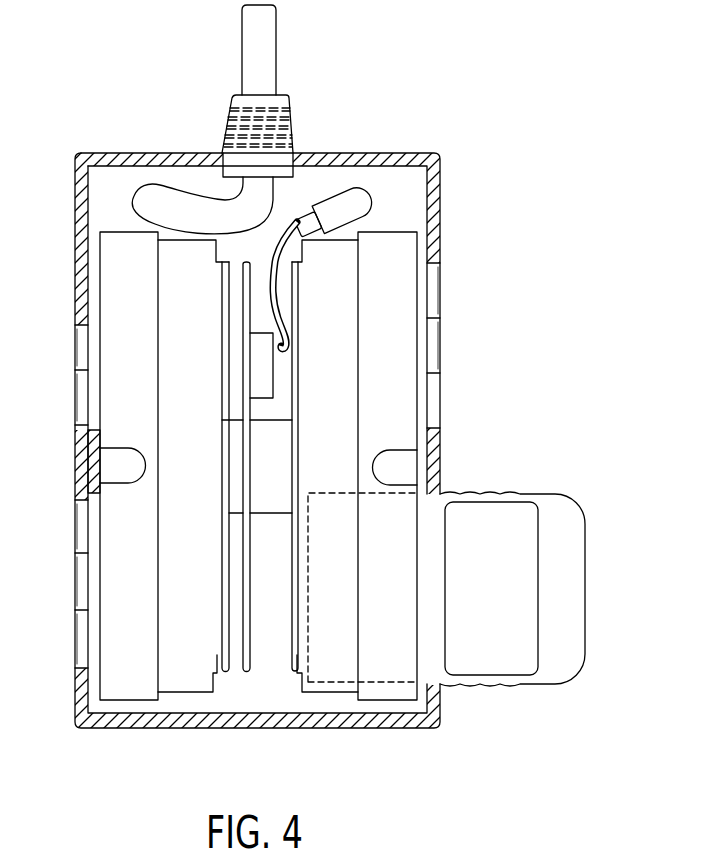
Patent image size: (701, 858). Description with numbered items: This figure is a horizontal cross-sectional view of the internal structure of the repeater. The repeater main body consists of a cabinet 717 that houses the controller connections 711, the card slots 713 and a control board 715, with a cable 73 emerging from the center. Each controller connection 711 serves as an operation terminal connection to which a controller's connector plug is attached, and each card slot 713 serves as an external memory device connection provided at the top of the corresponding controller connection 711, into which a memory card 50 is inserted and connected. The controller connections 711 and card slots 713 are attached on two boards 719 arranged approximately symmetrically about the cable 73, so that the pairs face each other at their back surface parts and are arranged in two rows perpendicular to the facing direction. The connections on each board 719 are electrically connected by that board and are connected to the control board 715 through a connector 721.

The cable 73 is at (262, 68).
The cabinet 717 is at (440, 212).
The controller connection 711 is at (87, 345).
The card slot 713 is at (118, 293).
The connector 721 is at (237, 485).
The board 719 is at (232, 662).
The control board 715 is at (257, 658).
The memory card 50 is at (572, 592).